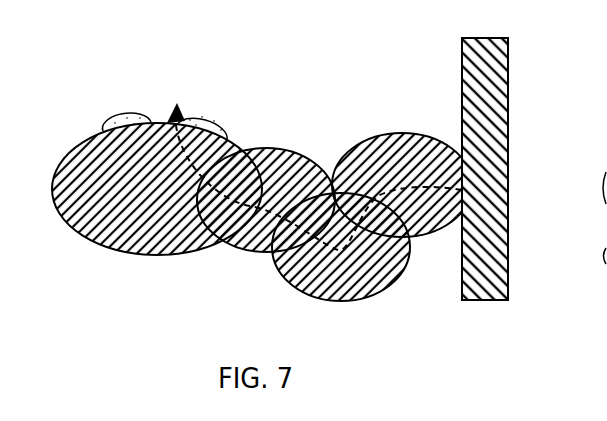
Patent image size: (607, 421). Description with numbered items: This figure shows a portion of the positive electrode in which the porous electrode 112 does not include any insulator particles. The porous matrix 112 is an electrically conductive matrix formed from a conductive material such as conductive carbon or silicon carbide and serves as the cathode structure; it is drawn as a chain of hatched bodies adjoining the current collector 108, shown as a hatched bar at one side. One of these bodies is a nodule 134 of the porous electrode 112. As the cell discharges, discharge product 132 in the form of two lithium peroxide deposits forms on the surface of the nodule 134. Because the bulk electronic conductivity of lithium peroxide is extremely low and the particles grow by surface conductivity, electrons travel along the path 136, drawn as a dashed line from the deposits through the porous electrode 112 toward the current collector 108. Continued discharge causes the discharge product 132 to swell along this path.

The current collector 108 is at (508, 55).
The porous matrix 112 is at (254, 278).
The discharge product 132 is at (592, 247).
The nodule 134 is at (108, 256).
The path 136 is at (281, 148).